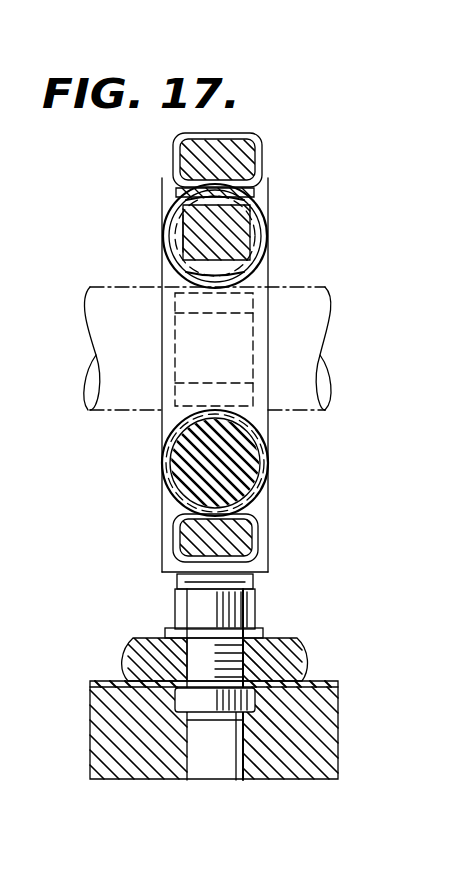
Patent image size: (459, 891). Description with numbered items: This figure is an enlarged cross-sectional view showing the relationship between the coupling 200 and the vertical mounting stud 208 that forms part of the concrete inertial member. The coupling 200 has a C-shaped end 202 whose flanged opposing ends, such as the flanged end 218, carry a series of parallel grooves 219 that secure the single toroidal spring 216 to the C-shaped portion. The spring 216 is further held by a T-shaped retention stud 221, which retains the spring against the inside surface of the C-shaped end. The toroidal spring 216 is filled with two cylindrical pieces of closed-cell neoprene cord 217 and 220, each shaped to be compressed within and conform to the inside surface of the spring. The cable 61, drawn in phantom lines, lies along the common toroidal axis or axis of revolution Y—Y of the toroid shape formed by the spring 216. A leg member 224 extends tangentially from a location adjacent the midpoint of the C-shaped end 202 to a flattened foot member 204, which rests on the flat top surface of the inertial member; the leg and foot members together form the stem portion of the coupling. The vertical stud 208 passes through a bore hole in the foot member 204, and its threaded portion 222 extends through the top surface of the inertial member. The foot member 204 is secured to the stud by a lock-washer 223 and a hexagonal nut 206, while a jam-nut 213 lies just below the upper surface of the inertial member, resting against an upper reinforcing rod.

The coupling 200 is at (262, 152).
The C-shaped end 202 is at (175, 160).
The closed-cell neoprene cord 217 is at (186, 190).
The toroidal spring 216 is at (258, 197).
The flanged opposing end 218 is at (232, 232).
The parallel grooves 219 is at (176, 228).
The shaft 61 is at (90, 287).
The toroidal axis Y- Y is at (92, 348).
The T-shaped retention stud 221 is at (175, 375).
The closed-cell neoprene cord 220 is at (182, 483).
The leg member 224 is at (177, 580).
The foot member 204 is at (150, 635).
The hexagonal nut 206 is at (250, 598).
The lock-washer 223 is at (258, 634).
The threaded portion 222 is at (192, 655).
The vertical mounting stud 208 is at (222, 772).
The jam-nut 213 is at (175, 700).